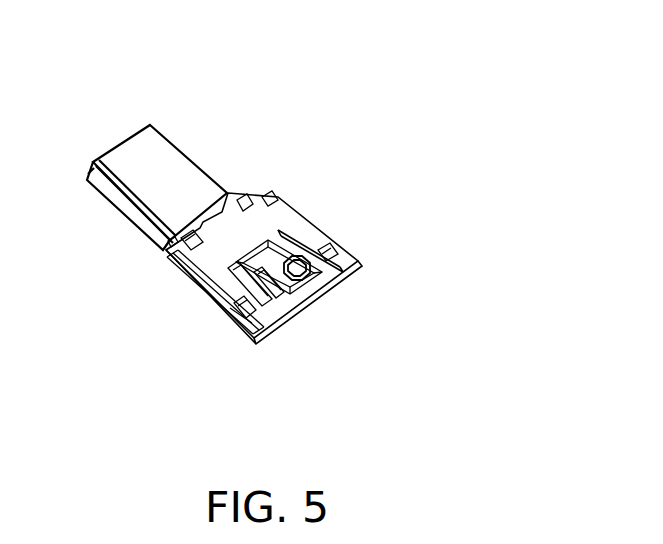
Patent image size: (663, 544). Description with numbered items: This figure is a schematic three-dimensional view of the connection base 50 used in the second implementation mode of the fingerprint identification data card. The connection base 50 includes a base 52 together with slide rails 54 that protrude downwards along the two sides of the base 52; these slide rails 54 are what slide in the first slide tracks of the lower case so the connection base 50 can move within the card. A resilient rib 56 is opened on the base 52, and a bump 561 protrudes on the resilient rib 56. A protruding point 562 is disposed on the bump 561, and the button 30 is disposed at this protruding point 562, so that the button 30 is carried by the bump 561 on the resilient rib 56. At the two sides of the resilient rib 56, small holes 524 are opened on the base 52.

The button 30 is at (347, 273).
The connection base 50 is at (353, 253).
The base 52 is at (243, 228).
The small holes 524 is at (323, 262).
The slide rails 54 is at (203, 298).
The resilient rib 56 is at (257, 300).
The bump 561 is at (280, 283).
The protruding point 562 is at (287, 270).